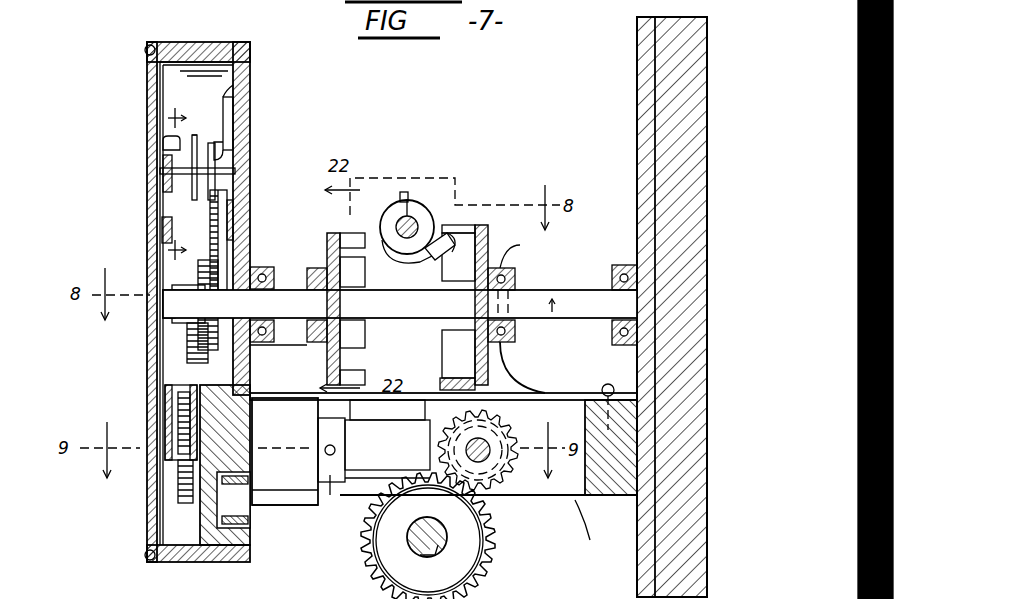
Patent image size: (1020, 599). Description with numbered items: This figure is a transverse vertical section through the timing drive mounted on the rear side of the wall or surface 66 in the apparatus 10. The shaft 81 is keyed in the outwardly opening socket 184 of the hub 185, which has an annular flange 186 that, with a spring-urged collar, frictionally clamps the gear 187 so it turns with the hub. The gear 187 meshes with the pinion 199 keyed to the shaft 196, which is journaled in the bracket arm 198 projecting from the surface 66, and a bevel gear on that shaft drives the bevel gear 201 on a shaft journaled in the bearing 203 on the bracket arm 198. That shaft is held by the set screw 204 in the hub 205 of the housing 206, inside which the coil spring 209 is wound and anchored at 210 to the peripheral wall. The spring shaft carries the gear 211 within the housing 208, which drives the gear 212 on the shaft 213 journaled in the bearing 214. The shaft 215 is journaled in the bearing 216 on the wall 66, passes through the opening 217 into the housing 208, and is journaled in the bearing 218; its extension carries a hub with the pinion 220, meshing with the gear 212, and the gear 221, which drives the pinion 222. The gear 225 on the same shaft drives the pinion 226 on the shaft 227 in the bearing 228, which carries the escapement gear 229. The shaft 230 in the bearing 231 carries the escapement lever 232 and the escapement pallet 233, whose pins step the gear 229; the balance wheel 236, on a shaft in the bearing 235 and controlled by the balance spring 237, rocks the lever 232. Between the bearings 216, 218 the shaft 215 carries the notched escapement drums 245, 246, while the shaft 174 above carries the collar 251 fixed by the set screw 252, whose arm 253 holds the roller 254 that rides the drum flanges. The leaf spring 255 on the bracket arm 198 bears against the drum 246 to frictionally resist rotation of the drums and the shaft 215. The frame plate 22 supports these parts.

The gear housing 10 is at (197, 302).
The frame plate 22 is at (443, 444).
The surface 66 is at (637, 136).
The shaft 81 is at (435, 552).
The shaft 174 is at (458, 232).
The socket 184 is at (440, 550).
The hub 185 is at (423, 528).
The annular flange 186 is at (400, 551).
The gear 187 is at (470, 580).
The shaft 196 is at (482, 455).
The bracket arm 198 is at (165, 598).
The pinion 199 is at (496, 432).
The bevel gear 201 is at (440, 425).
The bearing 203 is at (387, 449).
The set screw 204 is at (285, 451).
The hub 205 is at (330, 495).
The housing 206 is at (285, 505).
The housing 208 is at (197, 165).
The coil spring 209 is at (261, 590).
The anchor point 210 is at (334, 590).
The gear 211 is at (178, 485).
The gear 212 is at (200, 345).
The shaft 213 is at (255, 365).
The bearing 214 is at (178, 422).
The shaft 215 is at (400, 304).
The bearing 216 is at (622, 265).
The opening 217 is at (262, 267).
The bearing 218 is at (310, 262).
The pinion 220 is at (180, 323).
The gear 221 is at (195, 363).
The pinion 222 is at (165, 290).
The gear 225 is at (233, 235).
The pinion 226 is at (227, 205).
The shaft 227 is at (227, 225).
The bearing 228 is at (162, 230).
The escapement gear 229 is at (215, 185).
The shaft 230 is at (160, 171).
The bearing 231 is at (163, 145).
The escapement lever 232 is at (163, 188).
The escapement pallet 233 is at (232, 118).
The bearing 235 is at (232, 85).
The balance wheel 236 is at (196, 135).
The balance spring 237 is at (216, 145).
The escapement drum 245 is at (327, 352).
The escapement drum 246 is at (510, 345).
The collar 251 is at (415, 215).
The set screw 252 is at (404, 192).
The arm 253 is at (402, 265).
The roller 254 is at (455, 232).
The leaf spring 255 is at (530, 393).